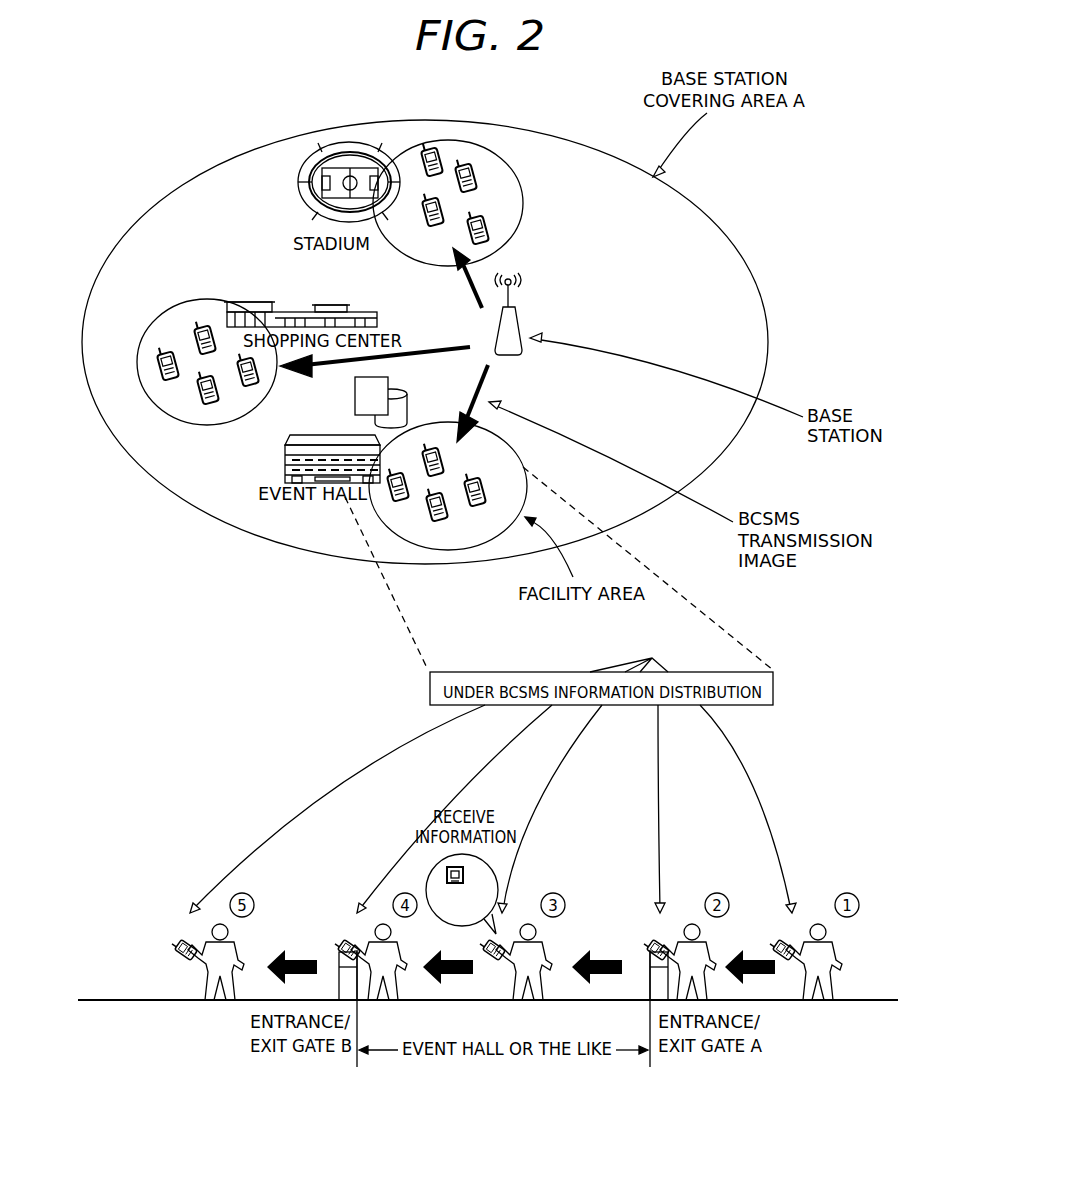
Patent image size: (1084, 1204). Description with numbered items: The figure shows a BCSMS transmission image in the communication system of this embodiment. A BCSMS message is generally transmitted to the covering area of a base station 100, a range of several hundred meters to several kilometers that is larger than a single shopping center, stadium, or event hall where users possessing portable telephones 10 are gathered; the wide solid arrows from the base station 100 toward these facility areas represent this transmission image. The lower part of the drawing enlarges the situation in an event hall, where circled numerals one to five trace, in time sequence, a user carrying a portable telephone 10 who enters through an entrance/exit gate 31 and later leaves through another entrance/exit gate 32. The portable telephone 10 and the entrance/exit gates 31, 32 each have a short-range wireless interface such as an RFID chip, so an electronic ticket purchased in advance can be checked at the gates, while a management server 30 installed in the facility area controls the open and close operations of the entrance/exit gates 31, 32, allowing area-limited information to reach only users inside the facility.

The base station 100 is at (522, 315).
The management server 30 is at (390, 380).
The portable telephone 10 is at (493, 449).
The entrance/exit gate 31 is at (649, 1020).
The entrance/exit gate 32 is at (358, 1020).